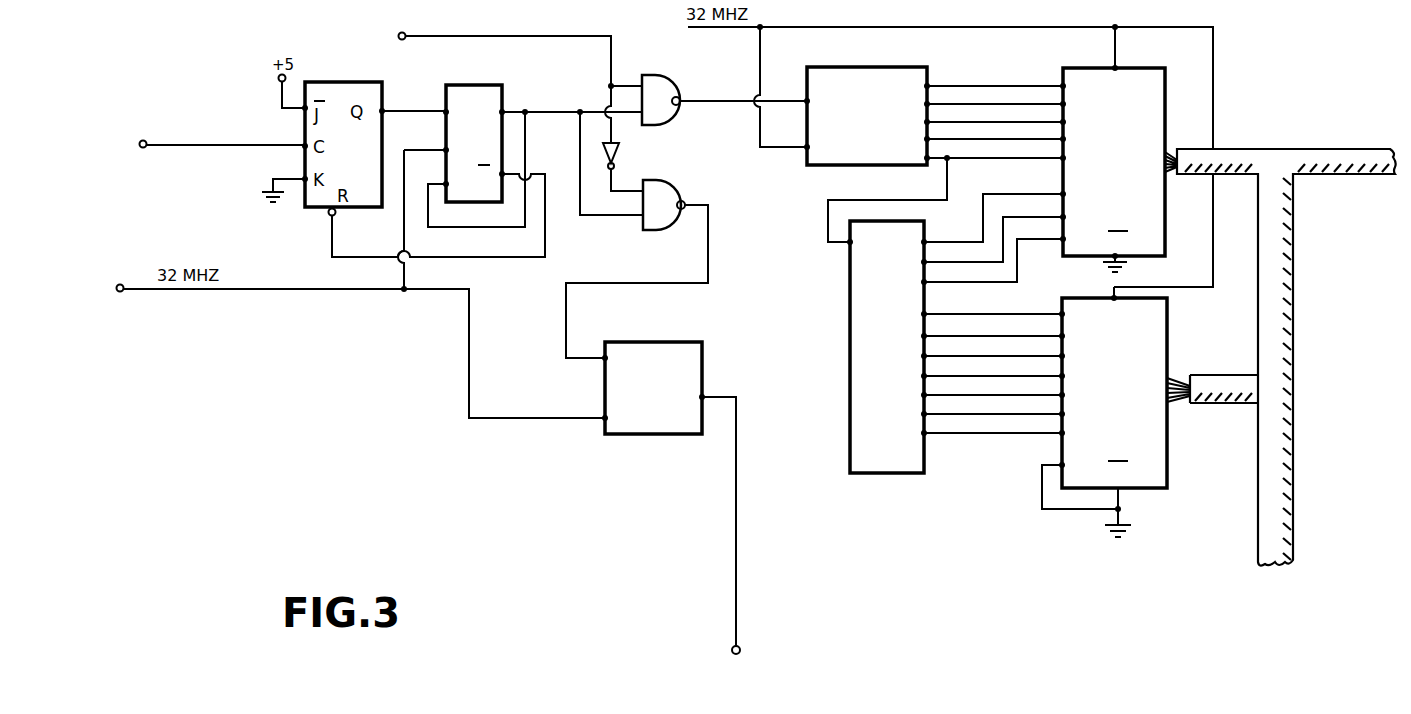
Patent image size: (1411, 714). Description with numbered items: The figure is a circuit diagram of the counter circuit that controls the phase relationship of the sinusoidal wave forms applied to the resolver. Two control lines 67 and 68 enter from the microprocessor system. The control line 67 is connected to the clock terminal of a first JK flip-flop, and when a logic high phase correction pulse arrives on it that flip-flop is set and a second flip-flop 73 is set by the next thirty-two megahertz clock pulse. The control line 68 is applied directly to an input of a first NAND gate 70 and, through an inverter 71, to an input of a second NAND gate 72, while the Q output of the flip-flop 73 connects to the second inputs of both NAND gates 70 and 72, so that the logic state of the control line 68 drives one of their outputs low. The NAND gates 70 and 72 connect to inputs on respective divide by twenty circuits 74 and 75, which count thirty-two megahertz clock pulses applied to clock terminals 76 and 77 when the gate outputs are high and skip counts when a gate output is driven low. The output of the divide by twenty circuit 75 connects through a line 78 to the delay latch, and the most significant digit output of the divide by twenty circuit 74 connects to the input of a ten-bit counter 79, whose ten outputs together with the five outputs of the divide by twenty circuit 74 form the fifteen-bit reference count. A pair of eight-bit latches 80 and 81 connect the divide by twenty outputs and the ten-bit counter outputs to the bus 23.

The bus 23 is at (1311, 149).
The control line 67 is at (146, 140).
The control line 68 is at (398, 36).
The first NAND gate 70 is at (665, 125).
The inverter 71 is at (620, 154).
The second NAND gate 72 is at (668, 181).
The second flip-flop 73 is at (468, 85).
The divide by twenty circuit 74 is at (889, 67).
The divide by twenty circuit 75 is at (703, 355).
The clock terminal 76 is at (805, 150).
The clock terminal 77 is at (604, 422).
The line 78 is at (737, 511).
The 10-bit counter 79 is at (905, 473).
The 8-bit latch 80 is at (1139, 68).
The 8-bit latch 81 is at (1168, 337).